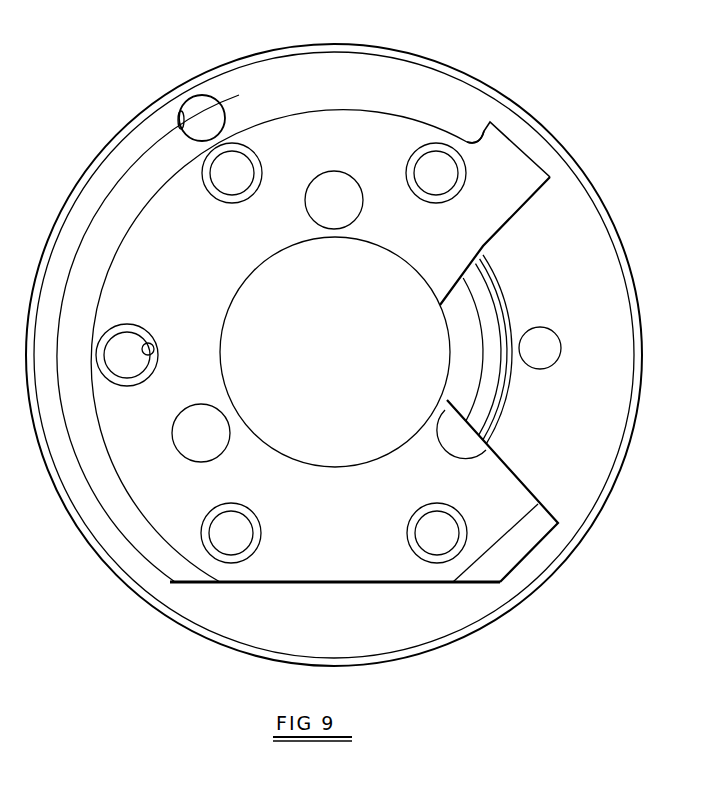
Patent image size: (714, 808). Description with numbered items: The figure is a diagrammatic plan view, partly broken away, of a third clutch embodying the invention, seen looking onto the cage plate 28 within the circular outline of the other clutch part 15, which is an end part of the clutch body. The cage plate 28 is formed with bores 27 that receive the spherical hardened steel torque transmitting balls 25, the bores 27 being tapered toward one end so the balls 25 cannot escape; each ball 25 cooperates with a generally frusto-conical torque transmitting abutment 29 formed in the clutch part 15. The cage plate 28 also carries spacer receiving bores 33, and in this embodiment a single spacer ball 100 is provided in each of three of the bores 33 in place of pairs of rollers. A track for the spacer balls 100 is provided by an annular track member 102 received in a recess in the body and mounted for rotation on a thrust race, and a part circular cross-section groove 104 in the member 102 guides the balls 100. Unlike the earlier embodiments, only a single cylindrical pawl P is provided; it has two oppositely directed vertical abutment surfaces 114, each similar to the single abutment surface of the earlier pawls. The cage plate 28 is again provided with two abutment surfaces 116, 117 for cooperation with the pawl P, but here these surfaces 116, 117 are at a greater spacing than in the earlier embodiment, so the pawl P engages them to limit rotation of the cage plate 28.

The other clutch part 15 is at (104, 566).
The cage plate 28 is at (125, 470).
The spacer ball 100 is at (208, 440).
The groove 104 is at (488, 388).
The annular track member 102 is at (508, 298).
The spacer receiving bores 33 is at (308, 203).
The torque transmitting balls 25 is at (128, 348).
The bores 27 is at (152, 358).
The torque transmitting abutments 29 is at (555, 348).
The pawl P is at (208, 110).
The abutment surface 116 is at (180, 112).
The abutment surfaces of the pawl 114 is at (226, 101).
The abutment surface 117 is at (477, 128).